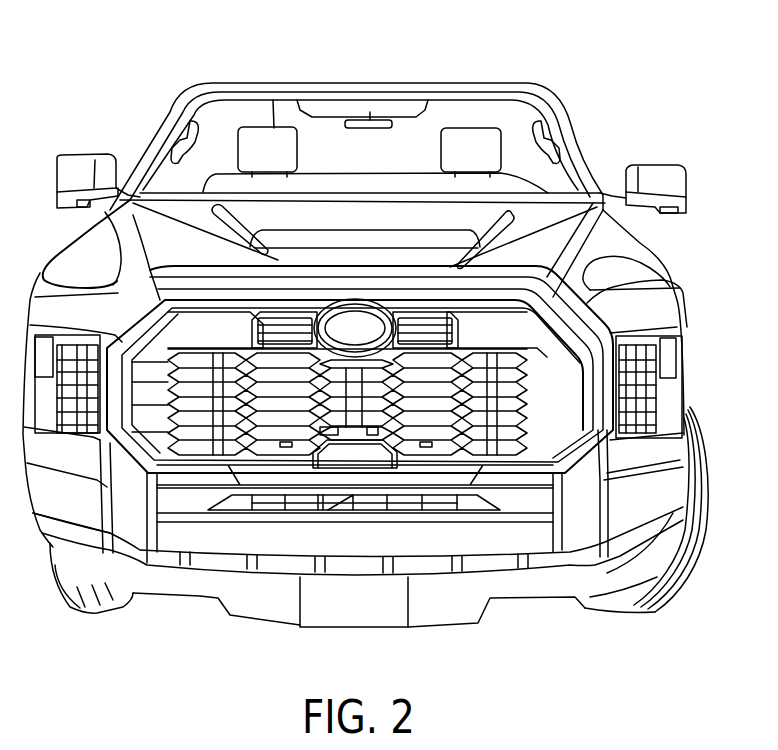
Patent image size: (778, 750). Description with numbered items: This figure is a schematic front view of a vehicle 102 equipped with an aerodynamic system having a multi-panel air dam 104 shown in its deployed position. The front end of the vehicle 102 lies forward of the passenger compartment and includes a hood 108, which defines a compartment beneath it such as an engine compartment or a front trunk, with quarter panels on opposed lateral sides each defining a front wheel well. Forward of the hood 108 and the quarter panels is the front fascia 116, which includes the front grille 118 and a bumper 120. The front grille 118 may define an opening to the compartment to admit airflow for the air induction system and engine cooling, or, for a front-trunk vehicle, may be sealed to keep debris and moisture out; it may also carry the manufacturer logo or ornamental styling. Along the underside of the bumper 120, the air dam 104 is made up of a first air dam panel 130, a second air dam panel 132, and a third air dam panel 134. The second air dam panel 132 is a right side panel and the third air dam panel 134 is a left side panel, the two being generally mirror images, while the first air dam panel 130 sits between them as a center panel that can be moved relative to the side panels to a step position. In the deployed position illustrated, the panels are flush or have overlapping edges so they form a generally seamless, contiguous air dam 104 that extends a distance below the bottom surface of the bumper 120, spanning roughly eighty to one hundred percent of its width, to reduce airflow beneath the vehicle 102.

The vehicle 102 is at (483, 82).
The air dam 104 is at (596, 592).
The hood 108 is at (383, 232).
The front fascia 116 is at (598, 428).
The front grille 118 is at (575, 412).
The bumper 120 is at (541, 537).
The first air dam panel 130 is at (348, 605).
The second air dam panel 132 is at (180, 583).
The third air dam panel 134 is at (523, 588).